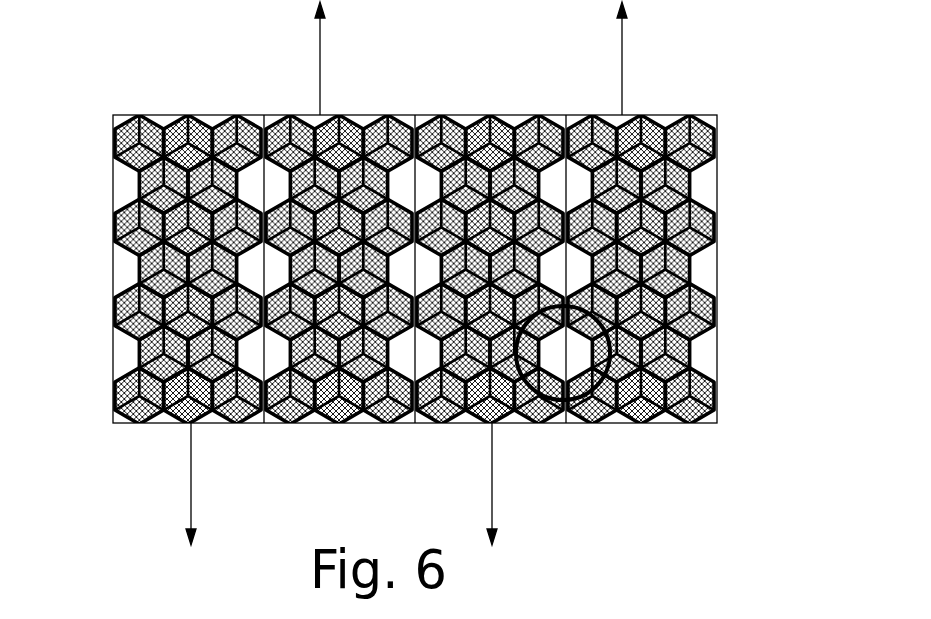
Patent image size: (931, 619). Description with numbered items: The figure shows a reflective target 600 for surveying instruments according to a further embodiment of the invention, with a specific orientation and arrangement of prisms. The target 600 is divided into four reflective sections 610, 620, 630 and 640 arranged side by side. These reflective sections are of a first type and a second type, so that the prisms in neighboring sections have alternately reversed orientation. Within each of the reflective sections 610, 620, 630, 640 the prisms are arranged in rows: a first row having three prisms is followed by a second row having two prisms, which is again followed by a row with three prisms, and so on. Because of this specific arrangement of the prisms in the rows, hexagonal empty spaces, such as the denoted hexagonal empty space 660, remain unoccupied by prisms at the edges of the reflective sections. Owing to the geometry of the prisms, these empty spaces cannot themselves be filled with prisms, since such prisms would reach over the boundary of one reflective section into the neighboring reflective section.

The reflective target 600 is at (386, 273).
The reflective section 610 is at (150, 115).
The reflective section 620 is at (315, 115).
The reflective section 630 is at (502, 115).
The reflective section 640 is at (672, 115).
The hexagonal empty space 660 is at (610, 351).